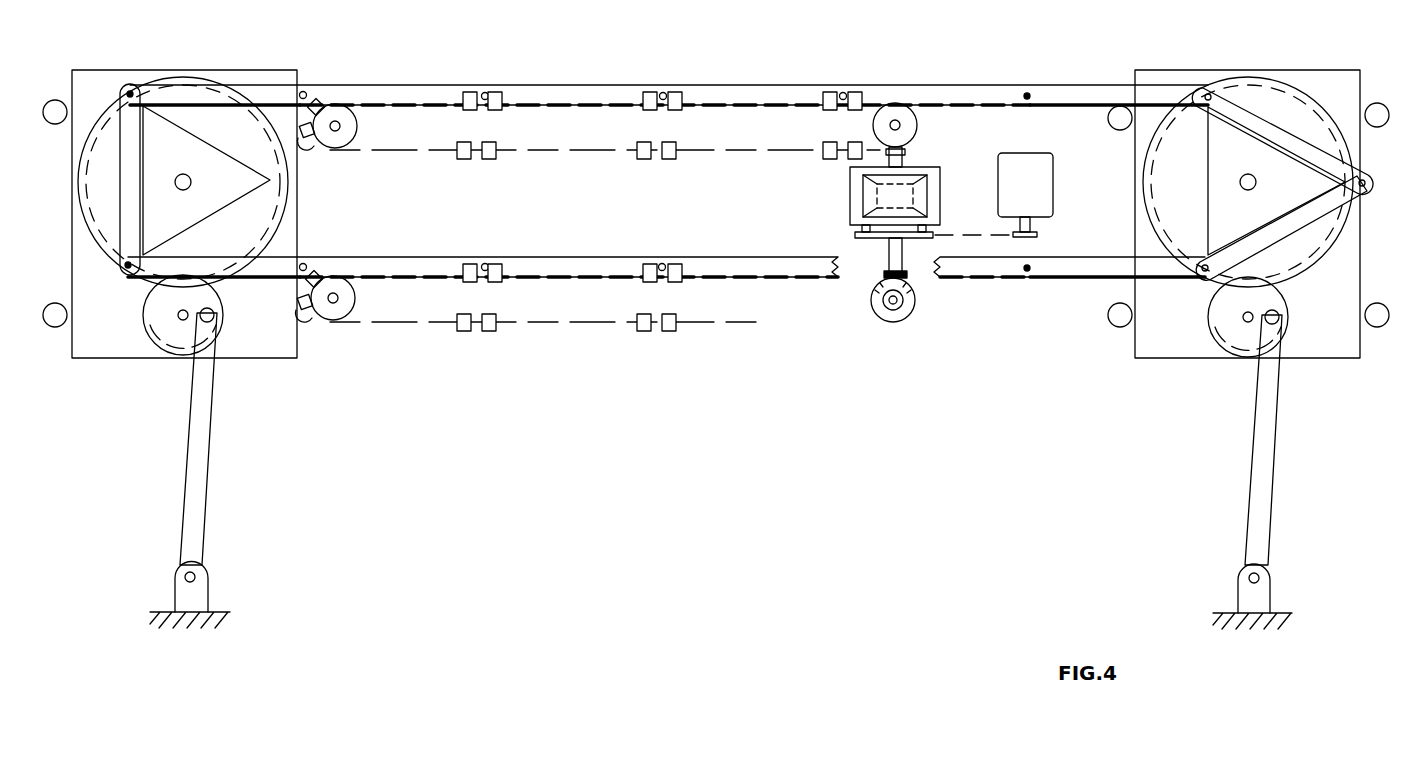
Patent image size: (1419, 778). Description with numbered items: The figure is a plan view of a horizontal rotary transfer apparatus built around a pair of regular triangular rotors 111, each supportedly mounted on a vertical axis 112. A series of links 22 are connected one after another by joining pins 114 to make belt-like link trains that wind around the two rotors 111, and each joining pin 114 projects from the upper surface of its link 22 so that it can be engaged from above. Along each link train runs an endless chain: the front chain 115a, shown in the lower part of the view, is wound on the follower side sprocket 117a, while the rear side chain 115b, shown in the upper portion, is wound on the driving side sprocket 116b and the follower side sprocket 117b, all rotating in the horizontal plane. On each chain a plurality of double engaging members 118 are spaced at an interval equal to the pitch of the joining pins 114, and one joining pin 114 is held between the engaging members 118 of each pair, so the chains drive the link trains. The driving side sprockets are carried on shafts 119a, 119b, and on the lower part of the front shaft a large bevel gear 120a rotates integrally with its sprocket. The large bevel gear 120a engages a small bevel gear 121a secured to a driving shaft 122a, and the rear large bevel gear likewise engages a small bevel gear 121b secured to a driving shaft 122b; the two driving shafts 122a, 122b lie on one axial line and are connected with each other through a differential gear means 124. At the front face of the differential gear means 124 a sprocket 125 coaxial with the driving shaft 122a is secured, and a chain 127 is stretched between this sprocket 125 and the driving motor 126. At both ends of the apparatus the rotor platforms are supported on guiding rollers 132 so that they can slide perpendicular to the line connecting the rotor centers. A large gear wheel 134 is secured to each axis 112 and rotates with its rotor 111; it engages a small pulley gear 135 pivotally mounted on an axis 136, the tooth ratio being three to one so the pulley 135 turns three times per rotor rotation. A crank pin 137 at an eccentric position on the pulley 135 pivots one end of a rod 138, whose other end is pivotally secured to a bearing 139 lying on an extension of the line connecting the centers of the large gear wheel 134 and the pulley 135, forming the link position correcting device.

The link 22 is at (217, 85).
The regular triangular rotor 111 is at (283, 215).
The vertical axis 112 is at (191, 184).
The joining pin 114 is at (130, 91).
The front chain 115a is at (521, 325).
The rear side chain 115b is at (523, 152).
The driving side sprocket 116b is at (905, 140).
The follower side sprocket 117a is at (333, 320).
The follower side sprocket 117b is at (335, 148).
The double engaging member 118 is at (650, 160).
The shaft 119a is at (882, 314).
The shaft 119b is at (910, 118).
The large bevel gear 120a is at (893, 322).
The small bevel gear 121a is at (882, 278).
The small bevel gear 121b is at (890, 126).
The driving shaft 122a is at (860, 238).
The driving shaft 122b is at (905, 165).
The differential gear means 124 is at (850, 182).
The sprocket 125 is at (865, 205).
The driving motor 126 is at (1040, 166).
The chain 127 is at (983, 240).
The guiding roller 132 is at (1377, 103).
The large gear wheel 134 is at (1318, 242).
The pulley (small gear) 135 is at (1222, 347).
The axis 136 is at (1247, 323).
The crank pin 137 is at (1271, 325).
The rod 138 is at (1258, 515).
The bearing 139 is at (1268, 573).